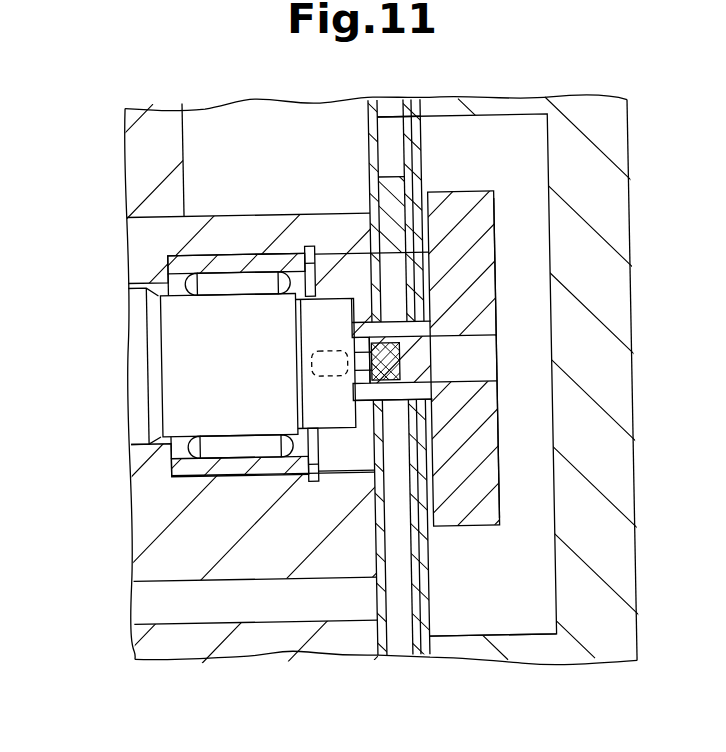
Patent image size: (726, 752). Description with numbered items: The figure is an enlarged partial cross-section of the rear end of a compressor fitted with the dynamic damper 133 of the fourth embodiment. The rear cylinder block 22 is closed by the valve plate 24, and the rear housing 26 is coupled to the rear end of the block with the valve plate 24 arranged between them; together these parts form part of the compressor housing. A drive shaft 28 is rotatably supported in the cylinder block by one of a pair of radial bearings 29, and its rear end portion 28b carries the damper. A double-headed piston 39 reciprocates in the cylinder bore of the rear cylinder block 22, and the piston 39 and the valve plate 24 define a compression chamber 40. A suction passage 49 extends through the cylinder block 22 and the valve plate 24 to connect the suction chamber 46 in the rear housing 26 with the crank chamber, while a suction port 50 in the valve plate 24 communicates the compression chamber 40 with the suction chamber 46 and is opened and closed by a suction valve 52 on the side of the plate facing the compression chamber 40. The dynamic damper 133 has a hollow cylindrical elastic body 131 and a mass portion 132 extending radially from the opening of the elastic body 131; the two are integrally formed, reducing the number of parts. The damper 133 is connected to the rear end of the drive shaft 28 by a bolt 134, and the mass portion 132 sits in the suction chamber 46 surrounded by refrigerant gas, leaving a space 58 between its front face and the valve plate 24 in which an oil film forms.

The rear cylinder block 22 is at (271, 640).
The valve plate 24 is at (397, 655).
The rear housing 26 is at (634, 317).
The drive shaft 28 is at (136, 384).
The shaft end portion 28b is at (170, 329).
The radial bearing 29 is at (253, 456).
The double-headed piston 39 is at (174, 103).
The compression chamber 40 is at (231, 170).
The suction chamber 46 is at (474, 614).
The suction passage 49 is at (212, 620).
The suction port 50 is at (394, 124).
The suction valve 52 is at (373, 148).
The space 58 is at (434, 194).
The elastic body 131 is at (390, 394).
The mass portion 132 is at (499, 290).
The dynamic damper 133 is at (499, 187).
The bolt 134 is at (402, 357).